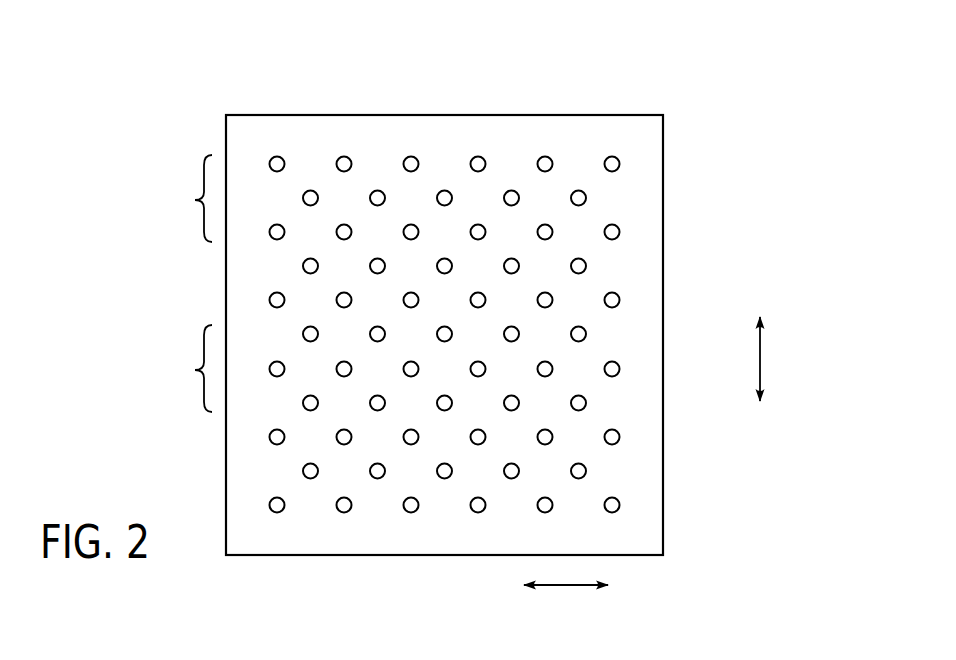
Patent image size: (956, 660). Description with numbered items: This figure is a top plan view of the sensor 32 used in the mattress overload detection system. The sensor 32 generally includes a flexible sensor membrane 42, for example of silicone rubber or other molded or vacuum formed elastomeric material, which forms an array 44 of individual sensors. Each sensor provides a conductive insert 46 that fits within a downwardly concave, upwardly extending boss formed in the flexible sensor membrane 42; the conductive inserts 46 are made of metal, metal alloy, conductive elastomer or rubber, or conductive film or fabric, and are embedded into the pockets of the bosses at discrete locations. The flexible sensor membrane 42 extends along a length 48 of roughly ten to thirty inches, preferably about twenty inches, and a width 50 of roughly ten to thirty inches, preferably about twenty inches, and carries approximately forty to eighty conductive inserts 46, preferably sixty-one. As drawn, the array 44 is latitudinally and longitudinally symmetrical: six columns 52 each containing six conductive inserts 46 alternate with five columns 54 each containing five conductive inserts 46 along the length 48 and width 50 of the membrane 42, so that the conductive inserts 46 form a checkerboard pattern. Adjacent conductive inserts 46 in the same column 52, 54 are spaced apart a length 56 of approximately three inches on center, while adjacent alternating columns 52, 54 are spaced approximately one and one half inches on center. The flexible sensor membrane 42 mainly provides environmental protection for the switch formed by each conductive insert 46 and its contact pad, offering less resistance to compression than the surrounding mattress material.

The sensor 32 is at (647, 82).
The flexible sensor membrane 42 is at (633, 200).
The array 44 is at (621, 400).
The conductive inserts 46 is at (620, 233).
The length 48 is at (760, 360).
The width 50 is at (563, 585).
The six-insert columns 52 is at (277, 146).
The five-insert columns 54 is at (310, 179).
The on-center spacing length 56 is at (187, 283).